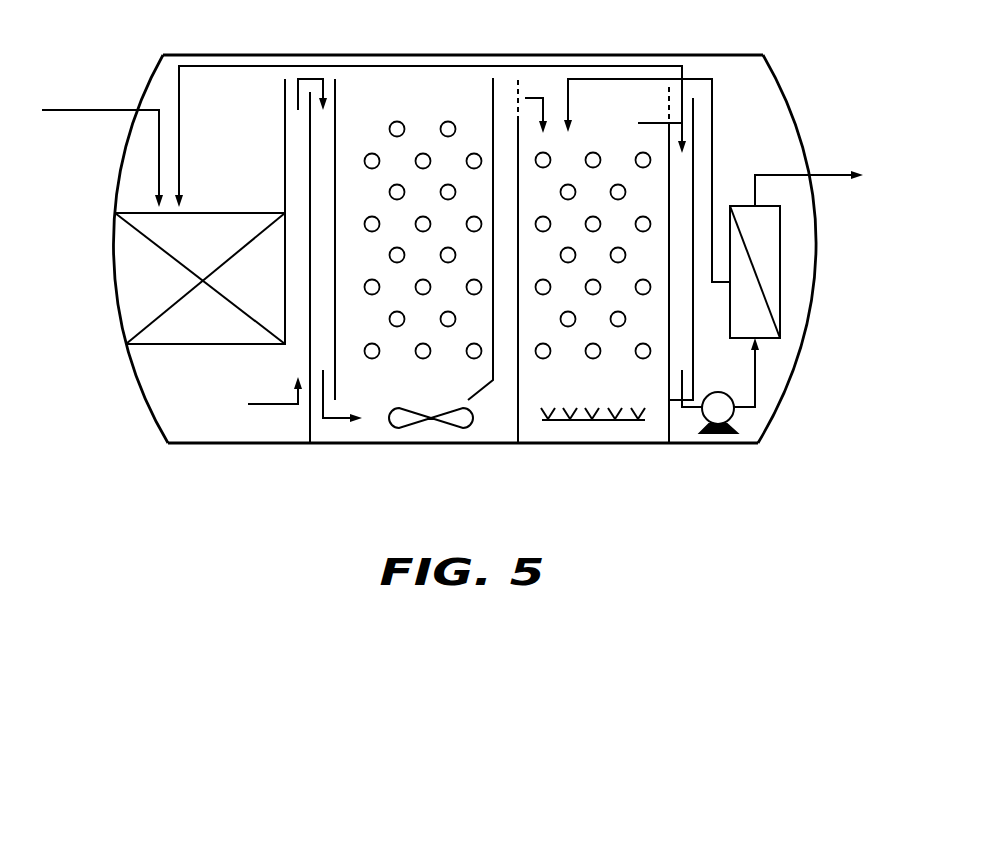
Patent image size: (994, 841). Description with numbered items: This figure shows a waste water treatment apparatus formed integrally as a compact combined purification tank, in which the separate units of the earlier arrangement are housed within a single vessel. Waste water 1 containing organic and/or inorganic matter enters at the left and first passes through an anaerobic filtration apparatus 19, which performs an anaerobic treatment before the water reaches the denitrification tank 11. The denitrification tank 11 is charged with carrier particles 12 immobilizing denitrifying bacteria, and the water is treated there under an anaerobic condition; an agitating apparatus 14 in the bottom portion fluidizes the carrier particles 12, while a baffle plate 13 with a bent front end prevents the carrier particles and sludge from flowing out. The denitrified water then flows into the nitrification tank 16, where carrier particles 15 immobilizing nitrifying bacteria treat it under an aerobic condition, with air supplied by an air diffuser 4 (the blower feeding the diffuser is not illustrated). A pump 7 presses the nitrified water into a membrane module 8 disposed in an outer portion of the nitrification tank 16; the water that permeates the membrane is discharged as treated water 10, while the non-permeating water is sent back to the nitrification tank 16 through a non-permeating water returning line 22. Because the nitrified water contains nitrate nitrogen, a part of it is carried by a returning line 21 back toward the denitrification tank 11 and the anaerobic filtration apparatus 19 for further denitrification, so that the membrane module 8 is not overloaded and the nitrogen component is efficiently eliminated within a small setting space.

The waste water 1 is at (85, 110).
The returning line 21 is at (493, 62).
The anaerobic filtration apparatus 19 is at (135, 288).
The denitrification tank 11 is at (375, 420).
The carrier particle 12 is at (370, 153).
The baffle plate 13 is at (492, 382).
The agitating apparatus 14 is at (463, 426).
The carrier particle 15 is at (592, 152).
The nitrification tank 16 is at (547, 424).
The air diffuser 4 is at (628, 424).
The pump 7 is at (716, 433).
The membrane module 8 is at (773, 279).
The treated water 10 is at (820, 175).
The non-permeating water returning line 22 is at (713, 150).